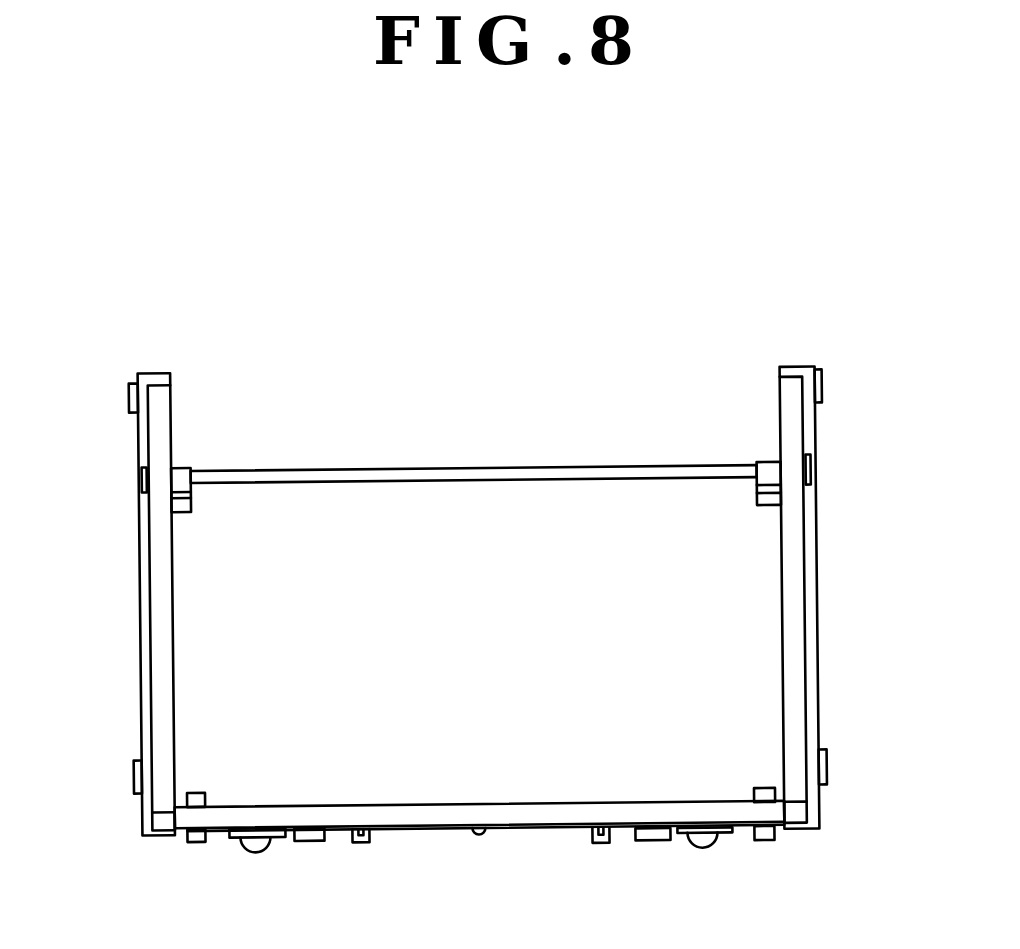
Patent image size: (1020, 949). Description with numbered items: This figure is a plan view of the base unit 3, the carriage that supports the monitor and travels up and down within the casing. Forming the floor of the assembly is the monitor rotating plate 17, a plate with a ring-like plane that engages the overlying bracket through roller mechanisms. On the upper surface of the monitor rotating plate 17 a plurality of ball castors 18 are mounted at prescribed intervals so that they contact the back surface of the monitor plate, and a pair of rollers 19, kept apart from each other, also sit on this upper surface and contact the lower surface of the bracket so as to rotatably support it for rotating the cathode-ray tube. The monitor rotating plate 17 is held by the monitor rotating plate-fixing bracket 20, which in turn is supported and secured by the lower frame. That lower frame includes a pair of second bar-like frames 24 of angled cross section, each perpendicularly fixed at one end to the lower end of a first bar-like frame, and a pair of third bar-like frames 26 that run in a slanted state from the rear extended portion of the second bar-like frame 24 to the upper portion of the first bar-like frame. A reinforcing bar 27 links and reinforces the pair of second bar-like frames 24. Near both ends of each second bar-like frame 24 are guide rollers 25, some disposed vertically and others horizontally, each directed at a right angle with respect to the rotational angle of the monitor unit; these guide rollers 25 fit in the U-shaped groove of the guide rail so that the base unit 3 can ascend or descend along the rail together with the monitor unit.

The base unit 3 is at (128, 550).
The monitor rotating plate 17 is at (433, 828).
The ball castors 18 is at (250, 839).
The rollers 19 is at (313, 840).
The monitor rotating plate-fixing bracket 20 is at (522, 804).
The second bar-like frame 24 is at (140, 609).
The guide rollers 25 is at (132, 380).
The third bar-like frame 26 is at (163, 625).
The reinforcing bar 27 is at (408, 468).